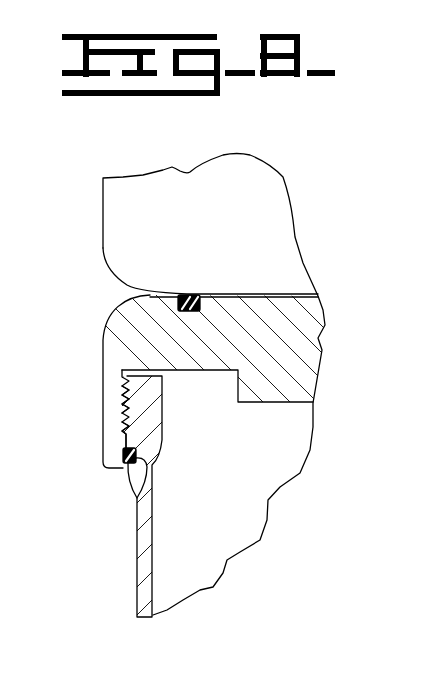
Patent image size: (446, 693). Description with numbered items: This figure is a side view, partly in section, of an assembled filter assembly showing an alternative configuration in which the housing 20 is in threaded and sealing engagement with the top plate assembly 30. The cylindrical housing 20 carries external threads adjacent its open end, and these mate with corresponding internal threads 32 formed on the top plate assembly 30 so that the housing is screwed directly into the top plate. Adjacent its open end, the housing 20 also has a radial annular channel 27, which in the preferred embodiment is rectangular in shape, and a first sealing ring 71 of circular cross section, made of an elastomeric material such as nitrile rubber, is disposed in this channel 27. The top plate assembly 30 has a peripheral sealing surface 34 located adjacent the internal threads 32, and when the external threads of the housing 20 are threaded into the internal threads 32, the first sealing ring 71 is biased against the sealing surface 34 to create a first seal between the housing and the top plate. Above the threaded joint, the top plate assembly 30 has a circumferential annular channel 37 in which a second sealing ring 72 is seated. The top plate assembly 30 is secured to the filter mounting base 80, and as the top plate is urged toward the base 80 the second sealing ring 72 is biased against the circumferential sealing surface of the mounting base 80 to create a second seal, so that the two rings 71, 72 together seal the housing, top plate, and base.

The filter mounting base 80 is at (263, 250).
The top plate assembly 30 is at (290, 353).
The housing 20 is at (137, 570).
The radial annular channel 27 is at (122, 403).
The internal threads 32 is at (132, 410).
The peripheral sealing surface 34 is at (133, 441).
The second sealing ring 72 is at (189, 294).
The circumferential annular channel 37 is at (190, 311).
The first sealing ring 71 is at (123, 455).